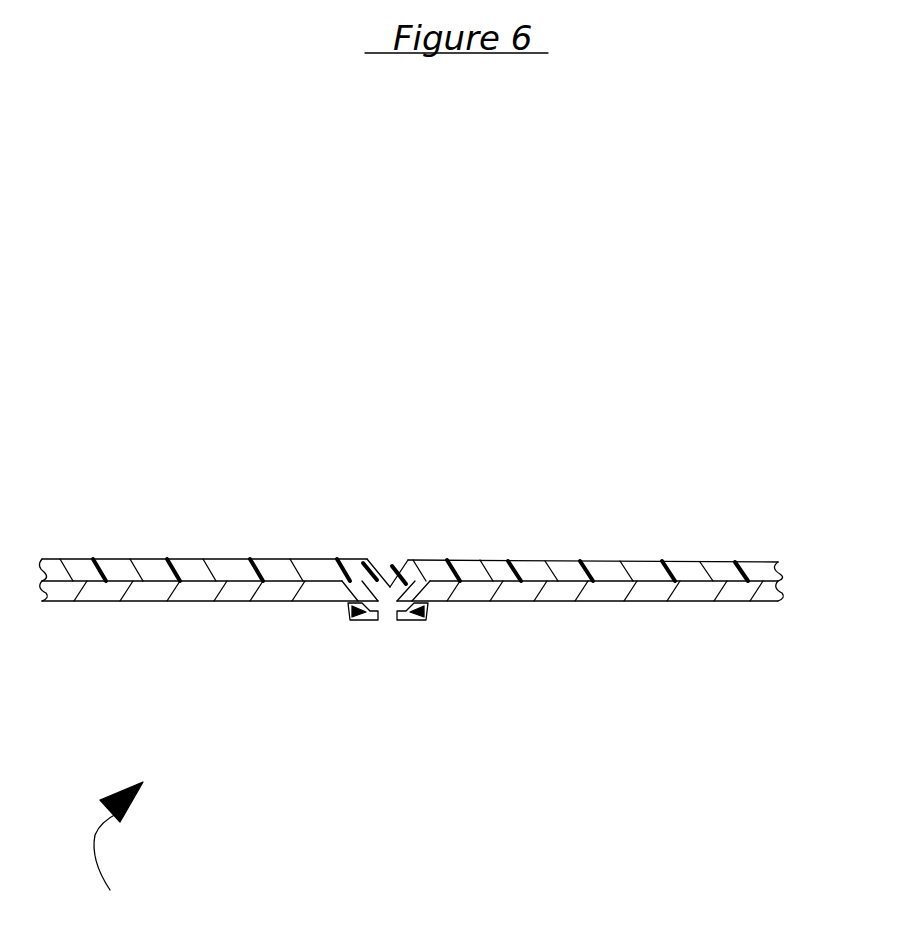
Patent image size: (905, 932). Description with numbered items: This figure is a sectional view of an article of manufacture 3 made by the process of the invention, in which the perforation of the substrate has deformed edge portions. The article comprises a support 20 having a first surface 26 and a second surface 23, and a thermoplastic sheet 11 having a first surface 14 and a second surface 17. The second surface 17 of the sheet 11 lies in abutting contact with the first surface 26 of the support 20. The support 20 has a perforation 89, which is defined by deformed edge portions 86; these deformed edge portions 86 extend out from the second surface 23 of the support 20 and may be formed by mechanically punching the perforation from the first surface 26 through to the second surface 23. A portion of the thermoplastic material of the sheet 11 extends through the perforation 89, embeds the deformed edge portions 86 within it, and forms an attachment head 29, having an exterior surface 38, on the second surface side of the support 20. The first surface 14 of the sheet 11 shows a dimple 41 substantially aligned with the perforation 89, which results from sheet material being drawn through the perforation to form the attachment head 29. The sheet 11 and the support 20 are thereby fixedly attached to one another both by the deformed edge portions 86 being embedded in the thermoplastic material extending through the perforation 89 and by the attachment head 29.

The article of manufacture 3 is at (121, 852).
The thermoplastic sheet 11 is at (88, 560).
The first surface of sheet 14 is at (641, 560).
The second surface of sheet 17 is at (565, 573).
The support 20 is at (90, 601).
The second surface of support 23 is at (590, 602).
The first surface of support 26 is at (662, 582).
The attachment head 29 is at (415, 620).
The exterior surface of attachment head 38 is at (355, 618).
The dimple 41 is at (378, 558).
The deformed edge portions 86 is at (378, 615).
The perforation 89 is at (388, 590).